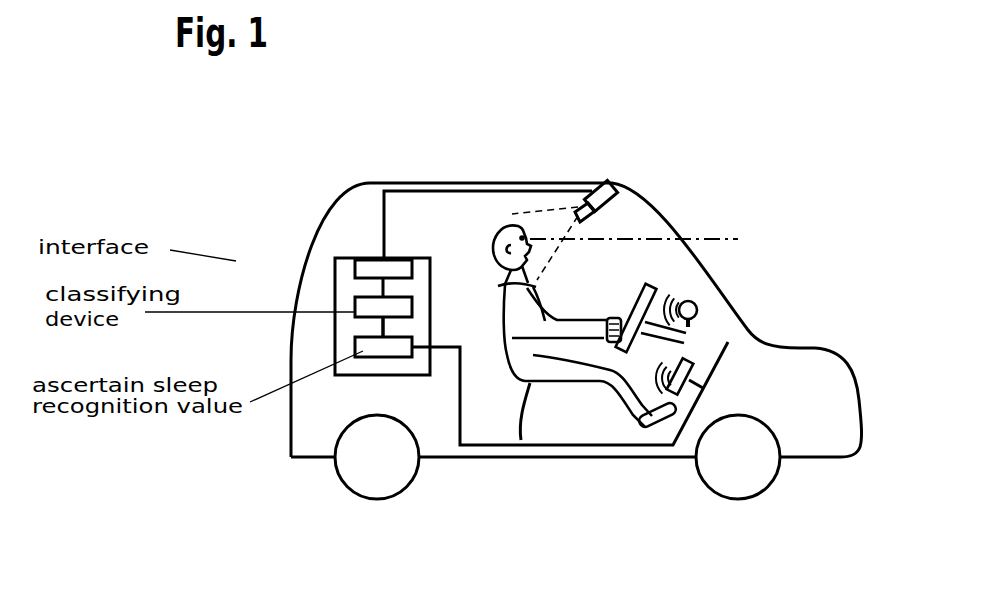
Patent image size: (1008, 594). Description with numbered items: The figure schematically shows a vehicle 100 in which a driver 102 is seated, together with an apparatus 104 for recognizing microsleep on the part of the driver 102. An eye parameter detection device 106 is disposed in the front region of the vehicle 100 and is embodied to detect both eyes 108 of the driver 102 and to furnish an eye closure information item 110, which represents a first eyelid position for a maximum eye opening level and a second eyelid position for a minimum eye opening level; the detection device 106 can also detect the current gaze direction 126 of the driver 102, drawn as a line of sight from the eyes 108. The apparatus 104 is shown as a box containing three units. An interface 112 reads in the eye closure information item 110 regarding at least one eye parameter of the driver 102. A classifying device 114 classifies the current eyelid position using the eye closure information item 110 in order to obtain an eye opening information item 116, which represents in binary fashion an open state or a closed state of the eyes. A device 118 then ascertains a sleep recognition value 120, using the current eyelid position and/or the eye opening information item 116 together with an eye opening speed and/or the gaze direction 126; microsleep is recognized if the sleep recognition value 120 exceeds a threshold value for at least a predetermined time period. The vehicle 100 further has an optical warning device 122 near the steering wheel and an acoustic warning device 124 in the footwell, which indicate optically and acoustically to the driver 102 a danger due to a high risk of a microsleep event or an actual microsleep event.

The vehicle 100 is at (408, 183).
The driver 102 is at (521, 445).
The apparatus 104 is at (338, 262).
The eye parameter detection device 106 is at (610, 183).
The eyes 108 is at (519, 226).
The eye closure information item 110 is at (487, 191).
The interface 112 is at (360, 270).
The classifying device 114 is at (362, 308).
The eye opening information item 116 is at (380, 325).
The device for ascertaining a sleep recognition value 118 is at (364, 348).
The sleep recognition value 120 is at (585, 446).
The optical warning device 122 is at (702, 307).
The acoustic warning device 124 is at (730, 343).
The gaze direction 126 is at (728, 238).